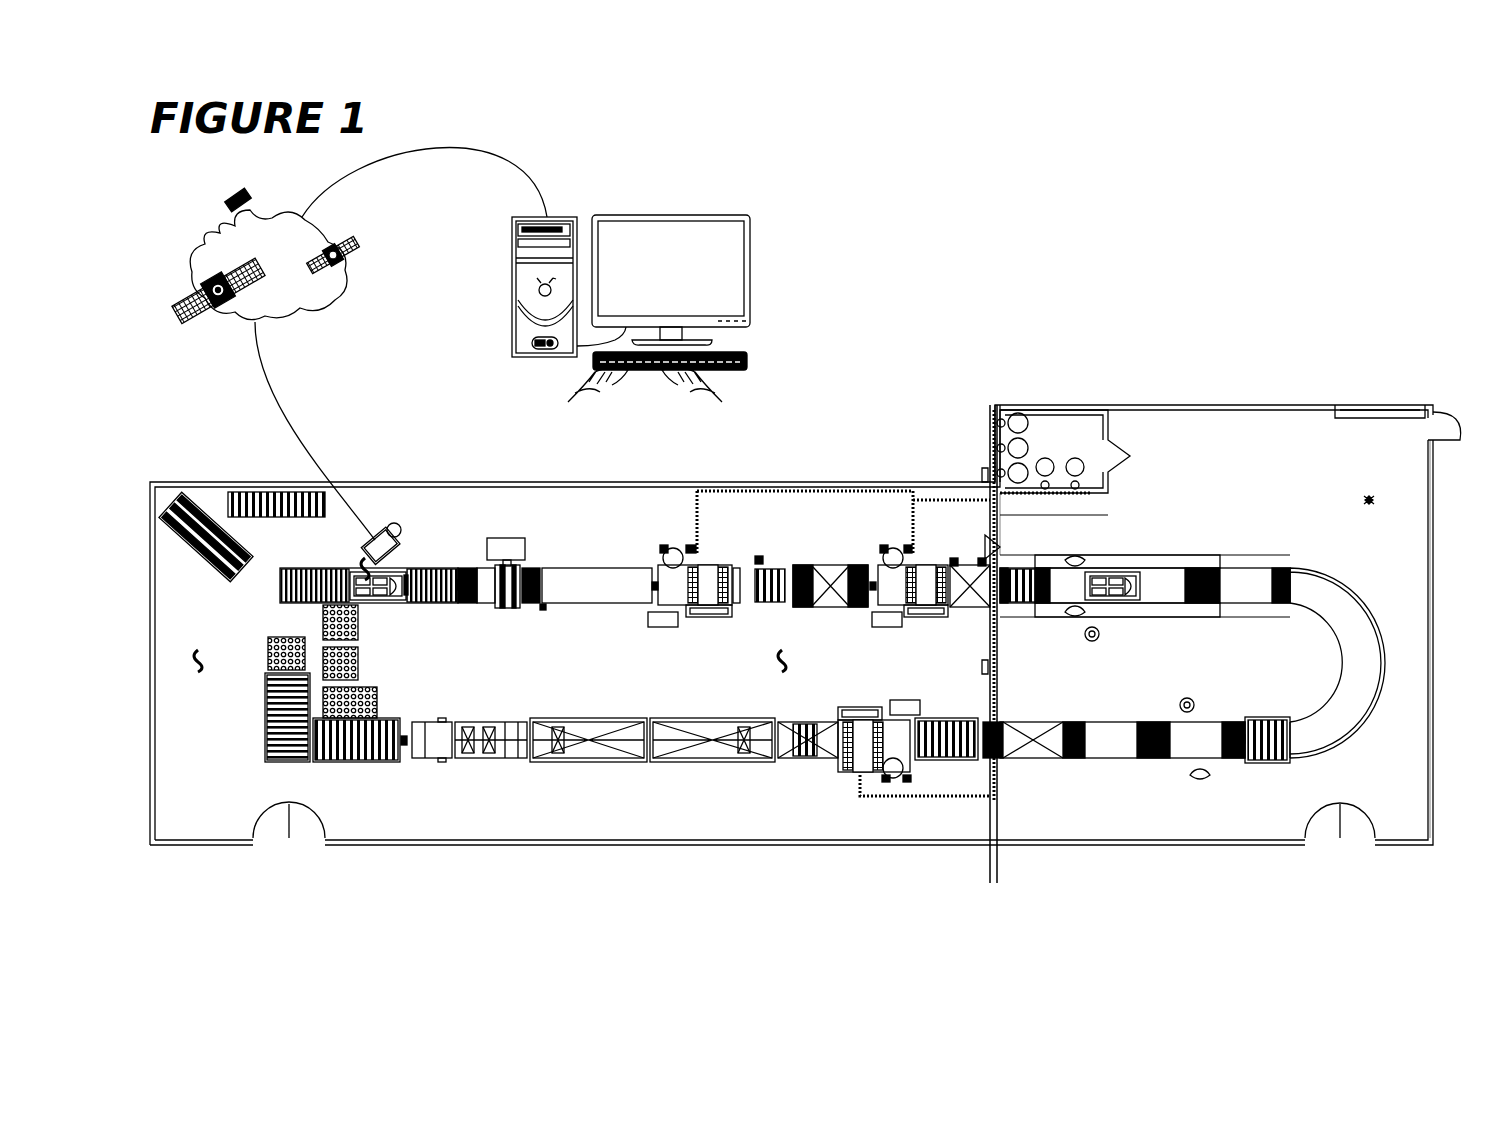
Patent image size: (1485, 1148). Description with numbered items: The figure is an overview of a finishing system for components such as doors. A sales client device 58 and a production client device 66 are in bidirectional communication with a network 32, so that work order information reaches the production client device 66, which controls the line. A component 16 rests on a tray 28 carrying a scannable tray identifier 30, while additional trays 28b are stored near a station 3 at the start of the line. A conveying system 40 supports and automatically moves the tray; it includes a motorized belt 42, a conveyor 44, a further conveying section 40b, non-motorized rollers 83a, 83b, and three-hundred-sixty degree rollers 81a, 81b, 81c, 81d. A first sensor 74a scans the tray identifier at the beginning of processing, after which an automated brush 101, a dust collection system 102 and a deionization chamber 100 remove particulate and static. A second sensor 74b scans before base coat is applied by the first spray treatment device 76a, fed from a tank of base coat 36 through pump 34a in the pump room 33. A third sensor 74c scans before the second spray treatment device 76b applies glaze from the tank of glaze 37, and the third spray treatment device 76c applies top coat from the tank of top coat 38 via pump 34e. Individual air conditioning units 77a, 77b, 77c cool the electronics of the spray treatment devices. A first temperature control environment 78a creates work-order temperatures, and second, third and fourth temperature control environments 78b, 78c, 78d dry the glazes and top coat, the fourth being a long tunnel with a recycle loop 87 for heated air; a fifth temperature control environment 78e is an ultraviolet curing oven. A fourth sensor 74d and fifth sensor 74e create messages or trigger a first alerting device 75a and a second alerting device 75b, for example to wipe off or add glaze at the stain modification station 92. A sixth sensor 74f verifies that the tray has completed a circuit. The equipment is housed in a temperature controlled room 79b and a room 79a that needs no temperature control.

The check-in station 3 is at (212, 560).
The component 16 is at (360, 572).
The sensor 28 is at (408, 596).
The additional trays 28b is at (175, 527).
The scannable tray identifier 30 is at (406, 575).
The network 32 is at (196, 250).
The pump room 33 is at (1108, 496).
The pump 34a is at (1000, 418).
The pump 34e is at (1078, 489).
The tank of base coat 36 is at (1040, 418).
The tank of glaze 37 is at (1040, 442).
The tank of top coat 38 is at (1075, 470).
The conveying system 40 is at (280, 603).
The conveyor system 40b is at (1150, 708).
The motorized belt 42 is at (604, 575).
The conveyor 44 is at (296, 575).
The sales client device 58 is at (512, 228).
The production client device 66 is at (390, 527).
The first sensor 74a is at (450, 590).
The second sensor 74b is at (652, 586).
The third sensor 74c is at (870, 585).
The fourth sensor 74d is at (990, 590).
The fifth sensor 74e is at (1240, 738).
The sixth sensor 74f is at (402, 742).
The first alerting device 75a is at (1098, 640).
The second alerting device 75b is at (1200, 690).
The first spray treatment device 76a is at (708, 565).
The second spray treatment device 76b is at (926, 565).
The third spray treatment device 76c is at (840, 765).
The individual air conditioning unit 77a is at (668, 627).
The individual air conditioning unit 77b is at (890, 627).
The individual air conditioning unit 77c is at (908, 700).
The first temperature control environment 78a is at (815, 570).
The second temperature control environment 78b is at (1355, 583).
The third temperature control environment 78c is at (1030, 722).
The fourth temperature control environment 78d is at (702, 720).
The fifth temperature control environment 78e is at (468, 727).
The room 79a is at (937, 830).
The temperature controlled room 79b is at (1410, 830).
The 360 degree roller 81a is at (358, 662).
The 360 degree roller 81b is at (323, 615).
The 360 degree roller 81c is at (378, 698).
The 360 degree roller 81d is at (268, 650).
The storage rack 83a is at (328, 760).
The storage rack 83b is at (275, 760).
The recycle loop 87 is at (532, 725).
The stain modification station 92 is at (1043, 547).
The deionization chamber 100 is at (515, 532).
The automated brush 101 is at (490, 580).
The dust collection system 102 is at (505, 605).